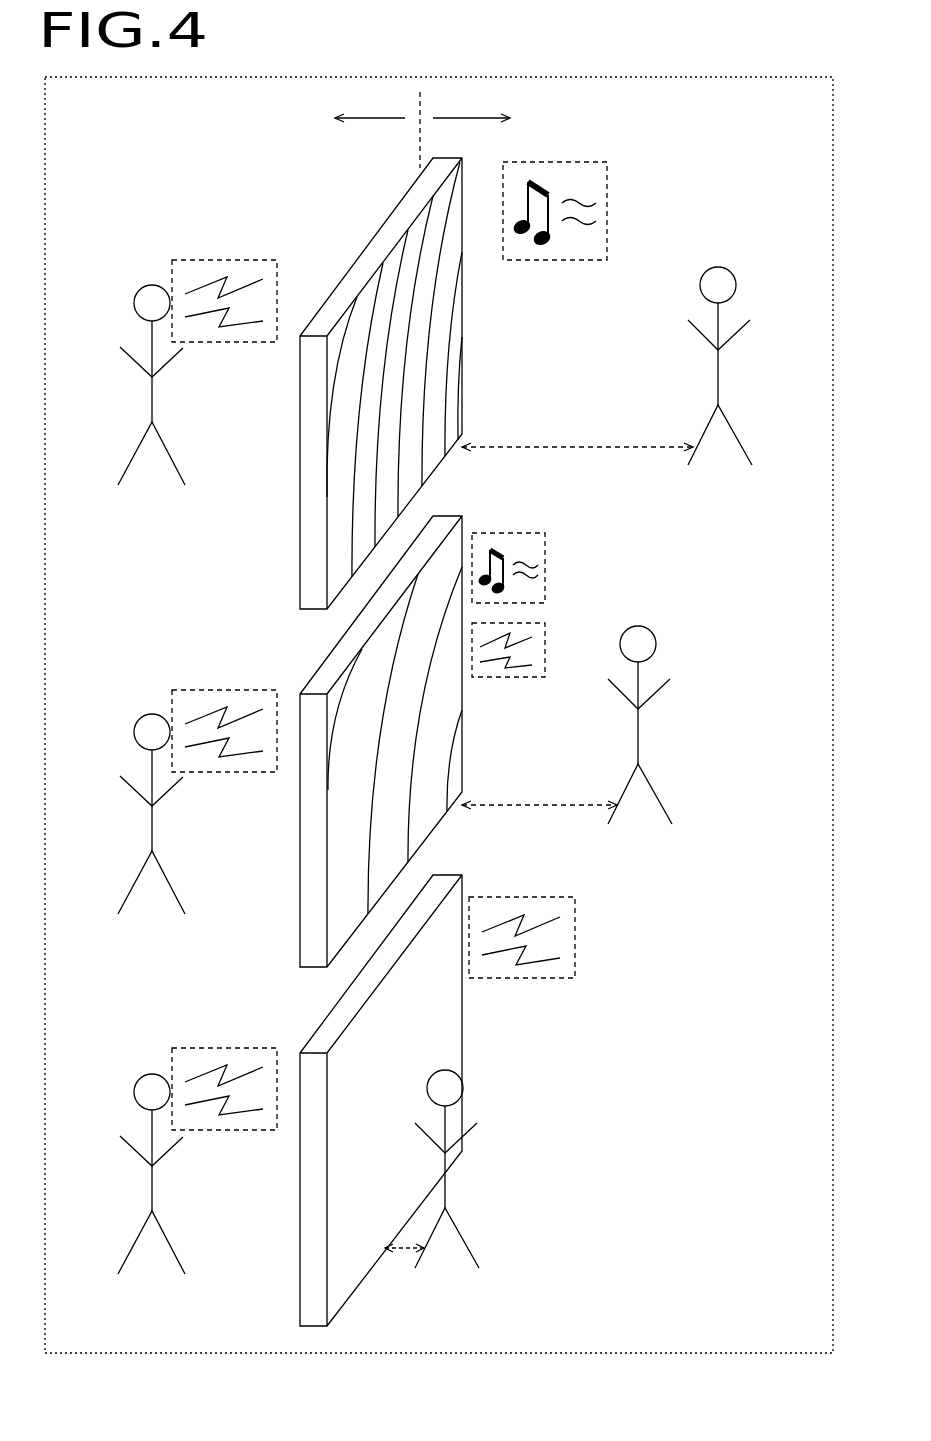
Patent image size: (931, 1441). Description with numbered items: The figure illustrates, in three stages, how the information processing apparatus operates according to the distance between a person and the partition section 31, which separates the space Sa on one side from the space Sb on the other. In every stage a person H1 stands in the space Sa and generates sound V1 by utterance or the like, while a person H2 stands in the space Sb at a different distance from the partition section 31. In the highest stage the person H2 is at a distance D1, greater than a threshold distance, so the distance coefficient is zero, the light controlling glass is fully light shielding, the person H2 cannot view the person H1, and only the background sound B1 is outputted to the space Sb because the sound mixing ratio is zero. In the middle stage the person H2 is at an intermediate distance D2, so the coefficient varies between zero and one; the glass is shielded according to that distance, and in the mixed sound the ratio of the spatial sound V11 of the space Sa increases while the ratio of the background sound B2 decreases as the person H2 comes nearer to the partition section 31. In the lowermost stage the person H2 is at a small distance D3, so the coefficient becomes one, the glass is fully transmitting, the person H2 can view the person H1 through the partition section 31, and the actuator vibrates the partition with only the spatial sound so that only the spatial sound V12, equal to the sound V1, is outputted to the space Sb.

The partition section 31 is at (377, 253).
The person H1 is at (134, 305).
The person H2 is at (737, 284).
The sound V1 is at (228, 260).
The spatial sound V11 is at (508, 680).
The spatial sound V12 is at (576, 940).
The background sound B1 is at (608, 208).
The background sound B2 is at (547, 567).
The distance D1 is at (580, 445).
The distance D2 is at (532, 808).
The distance D3 is at (396, 1250).
The space Sa is at (351, 121).
The space Sb is at (480, 130).